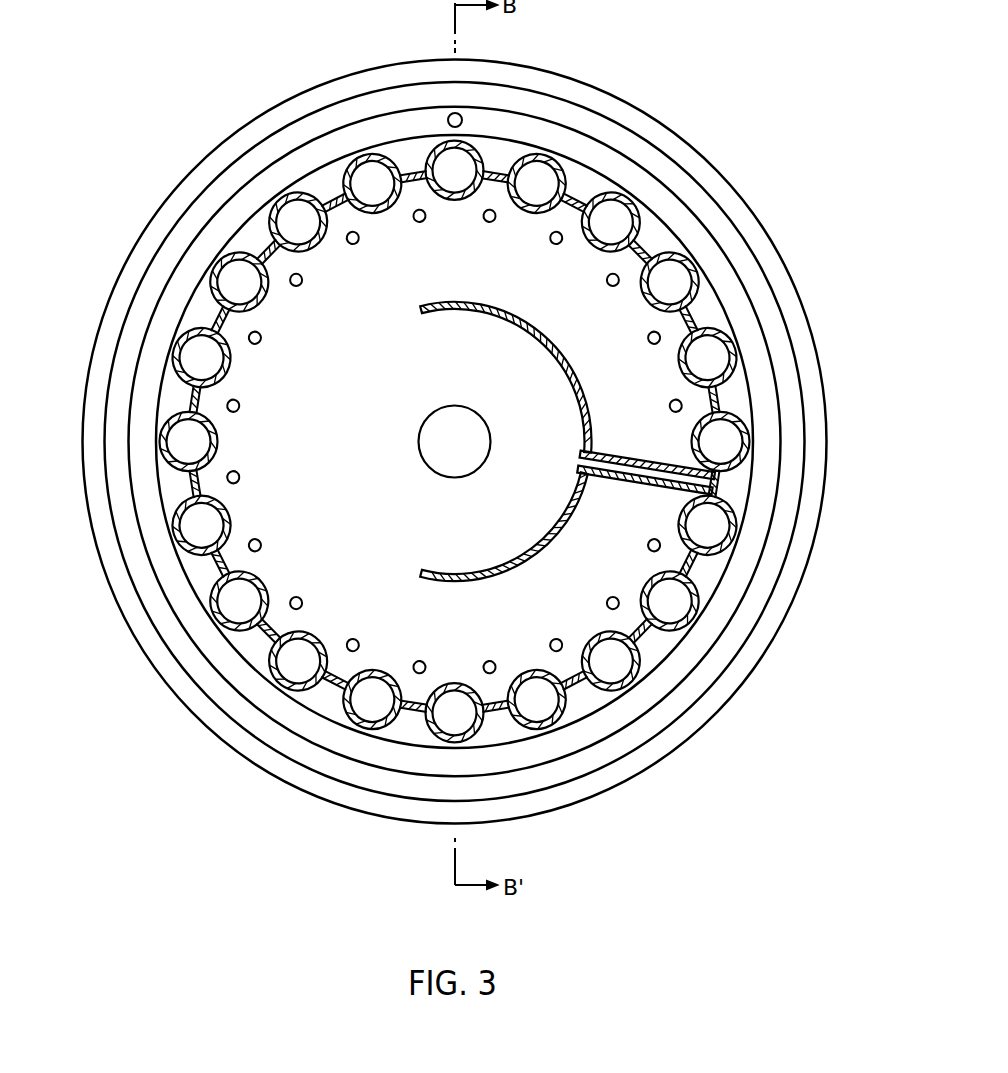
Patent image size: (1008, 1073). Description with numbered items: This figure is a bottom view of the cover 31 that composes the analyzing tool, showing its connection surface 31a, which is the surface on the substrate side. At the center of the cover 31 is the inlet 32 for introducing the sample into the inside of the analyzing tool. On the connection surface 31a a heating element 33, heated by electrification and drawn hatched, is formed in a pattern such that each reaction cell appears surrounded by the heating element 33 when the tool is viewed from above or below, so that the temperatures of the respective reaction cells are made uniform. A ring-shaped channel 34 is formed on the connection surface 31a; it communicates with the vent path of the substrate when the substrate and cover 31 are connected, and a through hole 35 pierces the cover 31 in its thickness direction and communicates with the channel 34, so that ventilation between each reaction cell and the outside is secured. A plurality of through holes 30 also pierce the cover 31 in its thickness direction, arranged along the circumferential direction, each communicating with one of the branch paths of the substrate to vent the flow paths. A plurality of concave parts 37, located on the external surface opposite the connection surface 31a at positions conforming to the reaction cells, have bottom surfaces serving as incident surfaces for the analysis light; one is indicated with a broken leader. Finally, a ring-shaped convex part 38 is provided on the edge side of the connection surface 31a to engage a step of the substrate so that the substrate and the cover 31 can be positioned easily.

The through holes 30 is at (424, 660).
The cover 31 is at (776, 242).
The connection surface 31a is at (658, 235).
The inlet 32 is at (432, 421).
The heating element 33 is at (263, 638).
The channel 34 is at (298, 719).
The through hole 35 is at (447, 120).
The concave parts 37 is at (196, 348).
The convex part 38 is at (652, 135).